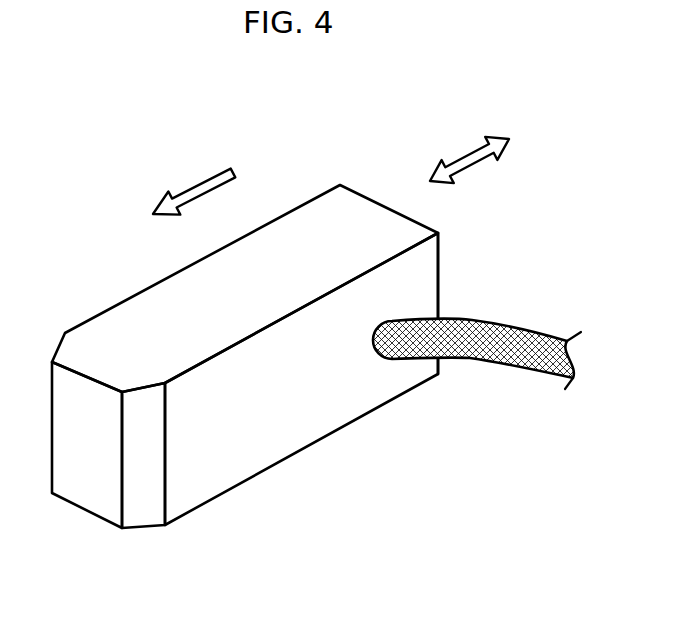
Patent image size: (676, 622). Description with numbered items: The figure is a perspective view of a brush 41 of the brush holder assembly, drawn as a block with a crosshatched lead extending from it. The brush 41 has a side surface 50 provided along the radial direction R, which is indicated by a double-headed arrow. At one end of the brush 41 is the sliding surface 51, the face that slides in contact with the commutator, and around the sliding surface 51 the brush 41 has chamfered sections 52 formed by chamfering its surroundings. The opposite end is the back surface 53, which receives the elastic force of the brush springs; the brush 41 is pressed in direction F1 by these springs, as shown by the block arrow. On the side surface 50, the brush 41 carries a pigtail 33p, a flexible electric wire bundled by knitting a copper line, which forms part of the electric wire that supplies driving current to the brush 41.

The brush 41 is at (180, 297).
The side surface 50 is at (237, 445).
The sliding surface 51 is at (87, 480).
The chamfered section 52 is at (137, 498).
The back surface 53 is at (440, 272).
The pigtail 33p is at (477, 340).
The pressing direction F1 is at (188, 198).
The radial direction R is at (465, 167).